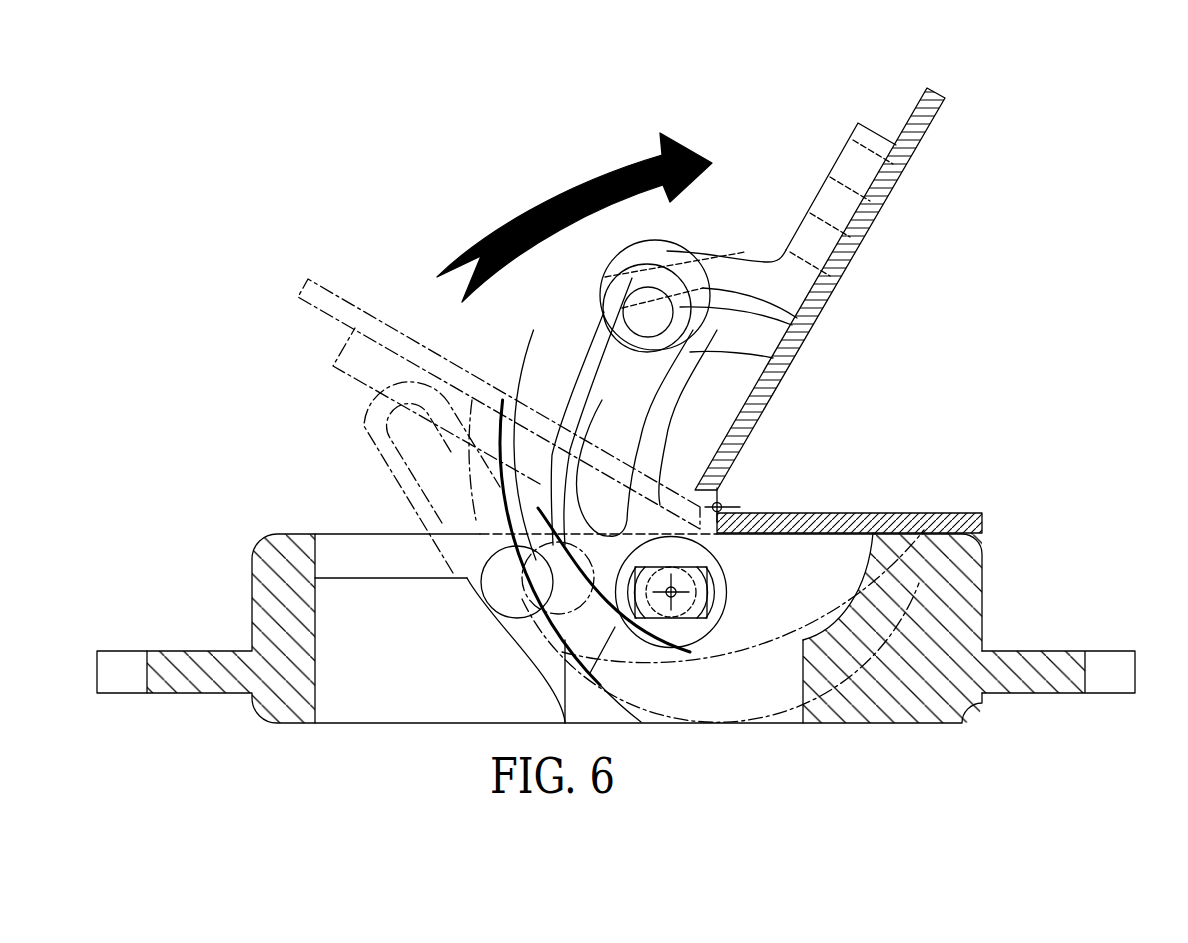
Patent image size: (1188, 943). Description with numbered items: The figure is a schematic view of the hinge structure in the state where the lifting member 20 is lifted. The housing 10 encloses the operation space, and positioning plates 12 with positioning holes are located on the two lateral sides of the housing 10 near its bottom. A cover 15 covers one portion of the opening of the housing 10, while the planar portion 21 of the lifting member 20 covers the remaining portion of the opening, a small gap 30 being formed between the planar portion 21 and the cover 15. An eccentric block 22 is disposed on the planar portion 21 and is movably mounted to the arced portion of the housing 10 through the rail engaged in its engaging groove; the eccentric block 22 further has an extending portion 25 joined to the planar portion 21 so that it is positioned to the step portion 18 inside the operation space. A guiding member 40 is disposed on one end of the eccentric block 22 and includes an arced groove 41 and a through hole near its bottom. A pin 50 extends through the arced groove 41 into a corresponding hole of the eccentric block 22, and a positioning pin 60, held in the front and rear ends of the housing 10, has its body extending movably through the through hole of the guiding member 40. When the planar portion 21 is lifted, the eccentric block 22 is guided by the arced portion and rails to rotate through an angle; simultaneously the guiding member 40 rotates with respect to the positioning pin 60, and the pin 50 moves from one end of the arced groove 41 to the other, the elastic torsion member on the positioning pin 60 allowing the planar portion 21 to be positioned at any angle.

The housing 10 is at (903, 698).
The positioning plates 12 is at (1040, 662).
The cover 15 is at (926, 513).
The step portion 18 is at (377, 578).
The lifting member 20 is at (673, 282).
The planar portion 21 is at (918, 130).
The eccentric block 22 is at (545, 380).
The extending portion 25 is at (880, 132).
The small gap 30 is at (722, 504).
The guiding member 40 is at (641, 273).
The arced groove 41 is at (617, 368).
The pin 50 is at (800, 330).
The positioning pin 60 is at (682, 603).